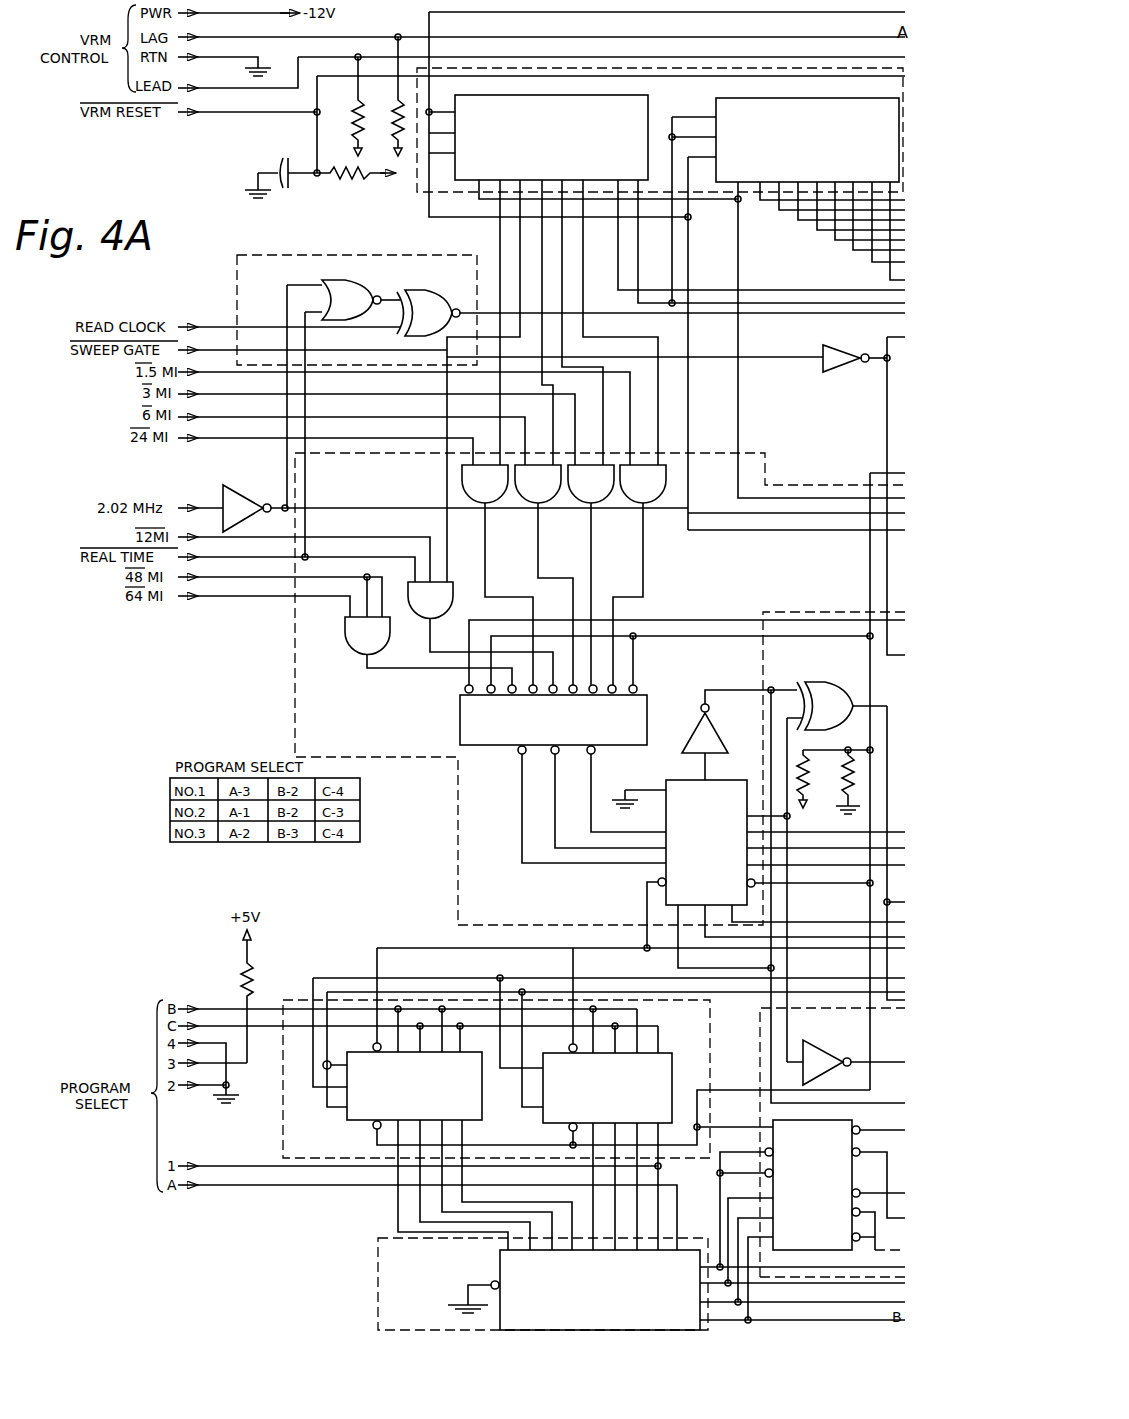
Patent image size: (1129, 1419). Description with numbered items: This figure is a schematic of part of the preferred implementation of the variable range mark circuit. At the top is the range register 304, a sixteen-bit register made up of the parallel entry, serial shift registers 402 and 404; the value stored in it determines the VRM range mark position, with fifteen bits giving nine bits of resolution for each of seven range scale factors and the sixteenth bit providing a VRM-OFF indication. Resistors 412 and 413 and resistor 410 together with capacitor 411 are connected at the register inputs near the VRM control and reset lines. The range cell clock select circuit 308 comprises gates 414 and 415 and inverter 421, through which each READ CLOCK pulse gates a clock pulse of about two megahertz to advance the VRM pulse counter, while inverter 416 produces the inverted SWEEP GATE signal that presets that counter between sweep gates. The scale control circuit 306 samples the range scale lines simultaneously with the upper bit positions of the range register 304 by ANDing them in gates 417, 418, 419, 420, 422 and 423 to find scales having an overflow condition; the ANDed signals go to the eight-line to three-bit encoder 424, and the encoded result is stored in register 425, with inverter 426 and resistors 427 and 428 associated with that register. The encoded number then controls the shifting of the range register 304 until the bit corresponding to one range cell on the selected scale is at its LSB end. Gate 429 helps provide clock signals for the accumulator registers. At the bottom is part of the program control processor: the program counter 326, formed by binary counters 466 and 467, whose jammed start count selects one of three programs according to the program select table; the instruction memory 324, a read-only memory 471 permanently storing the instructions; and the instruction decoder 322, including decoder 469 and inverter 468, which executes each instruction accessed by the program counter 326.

The range register 304 is at (417, 195).
The scale control circuit 306 is at (295, 685).
The range cell clock select circuit 308 is at (415, 257).
The instruction decoder 322 is at (758, 1085).
The instruction memory 324 is at (378, 1268).
The program counter 326 is at (282, 1133).
The register 402 is at (580, 134).
The register 404 is at (833, 134).
The resistor 410 is at (361, 186).
The capacitor 411 is at (278, 170).
The resistor 412 is at (343, 109).
The resistor 413 is at (383, 99).
The gate 414 is at (345, 288).
The gate 415 is at (416, 300).
The inverter 416 is at (822, 352).
The AND gate 417 is at (492, 504).
The AND gate 418 is at (545, 504).
The AND gate 419 is at (598, 504).
The AND gate 420 is at (650, 504).
The inverter 421 is at (228, 486).
The AND gate 422 is at (342, 620).
The AND gate 423 is at (425, 610).
The 8-line to 3-bit encoder 424 is at (647, 697).
The register 425 is at (713, 840).
The inverter 426 is at (716, 724).
The resistor 427 is at (834, 786).
The resistor 428 is at (844, 772).
The gate 429 is at (818, 686).
The binary counter 466 is at (349, 1112).
The binary counter 467 is at (540, 1112).
The inverter 468 is at (815, 1058).
The decoder 469 is at (819, 1220).
The read-only memory 471 is at (596, 1314).